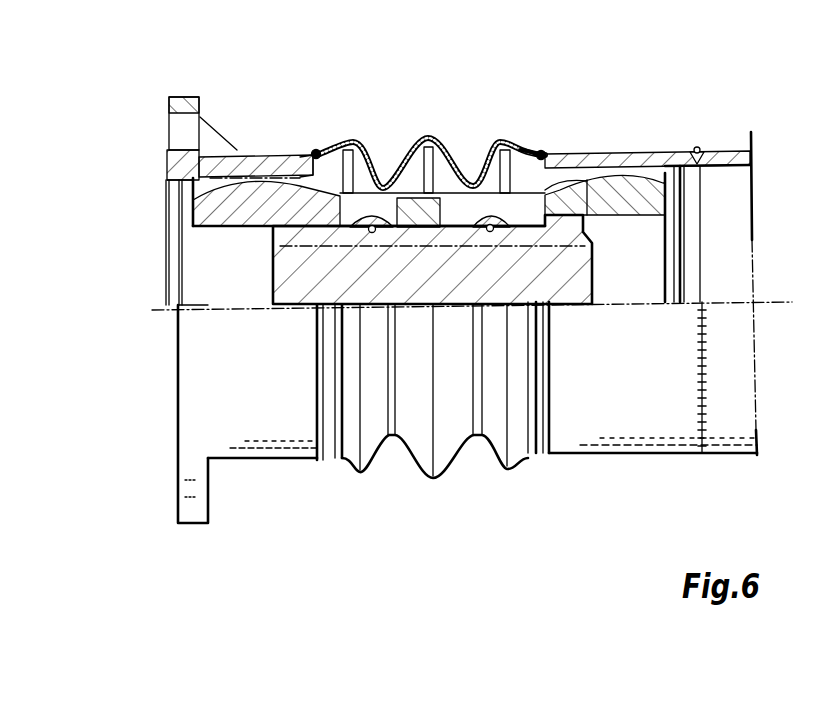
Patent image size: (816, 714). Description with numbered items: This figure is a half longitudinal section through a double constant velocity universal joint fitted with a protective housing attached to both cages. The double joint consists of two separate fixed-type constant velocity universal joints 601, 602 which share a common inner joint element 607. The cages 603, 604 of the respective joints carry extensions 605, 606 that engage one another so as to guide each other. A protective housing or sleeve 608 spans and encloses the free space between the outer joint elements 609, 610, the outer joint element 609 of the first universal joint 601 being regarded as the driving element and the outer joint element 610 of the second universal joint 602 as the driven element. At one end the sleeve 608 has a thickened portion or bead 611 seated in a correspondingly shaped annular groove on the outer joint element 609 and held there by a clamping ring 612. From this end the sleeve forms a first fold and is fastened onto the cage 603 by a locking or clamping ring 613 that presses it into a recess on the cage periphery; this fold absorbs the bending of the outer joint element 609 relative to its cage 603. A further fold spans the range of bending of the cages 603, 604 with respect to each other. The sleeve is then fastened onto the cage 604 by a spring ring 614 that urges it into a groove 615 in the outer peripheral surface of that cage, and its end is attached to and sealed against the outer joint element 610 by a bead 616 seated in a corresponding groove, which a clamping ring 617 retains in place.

The constant velocity universal joint 601 is at (275, 512).
The constant velocity universal joint 602 is at (647, 506).
The cage 603 is at (168, 137).
The cage 604 is at (660, 165).
The extension 605 is at (402, 146).
The extension 606 is at (412, 197).
The common inner joint element 607 is at (590, 196).
The protective housing or sleeve 608 is at (445, 514).
The outer joint element 609 is at (171, 138).
The outer joint element 610 is at (637, 162).
The thickened portion or bead 611 is at (313, 152).
The clamping ring 612 is at (318, 148).
The locking or clamping ring 613 is at (383, 186).
The spring ring 614 is at (473, 180).
The groove 615 is at (483, 150).
The bead 616 is at (544, 156).
The clamping ring 617 is at (534, 150).